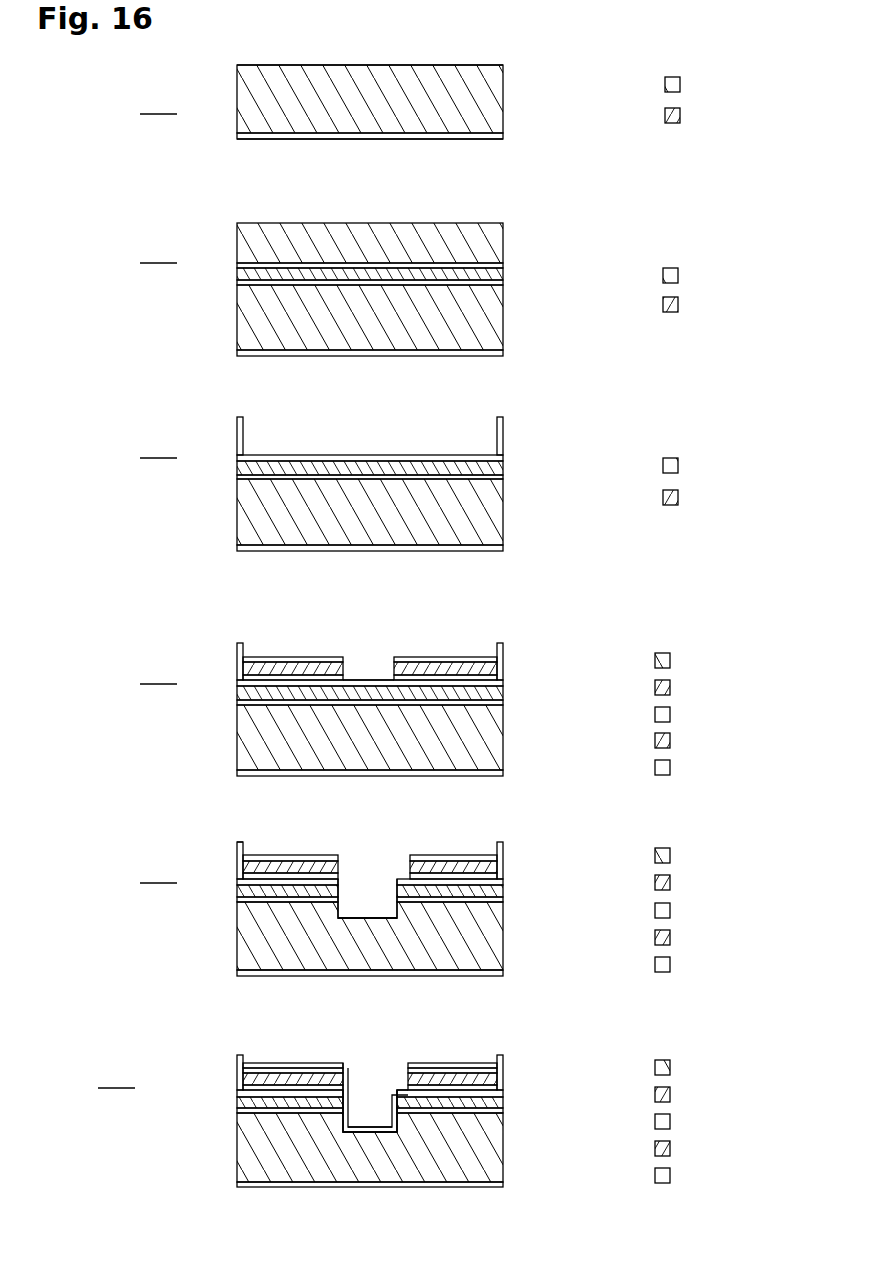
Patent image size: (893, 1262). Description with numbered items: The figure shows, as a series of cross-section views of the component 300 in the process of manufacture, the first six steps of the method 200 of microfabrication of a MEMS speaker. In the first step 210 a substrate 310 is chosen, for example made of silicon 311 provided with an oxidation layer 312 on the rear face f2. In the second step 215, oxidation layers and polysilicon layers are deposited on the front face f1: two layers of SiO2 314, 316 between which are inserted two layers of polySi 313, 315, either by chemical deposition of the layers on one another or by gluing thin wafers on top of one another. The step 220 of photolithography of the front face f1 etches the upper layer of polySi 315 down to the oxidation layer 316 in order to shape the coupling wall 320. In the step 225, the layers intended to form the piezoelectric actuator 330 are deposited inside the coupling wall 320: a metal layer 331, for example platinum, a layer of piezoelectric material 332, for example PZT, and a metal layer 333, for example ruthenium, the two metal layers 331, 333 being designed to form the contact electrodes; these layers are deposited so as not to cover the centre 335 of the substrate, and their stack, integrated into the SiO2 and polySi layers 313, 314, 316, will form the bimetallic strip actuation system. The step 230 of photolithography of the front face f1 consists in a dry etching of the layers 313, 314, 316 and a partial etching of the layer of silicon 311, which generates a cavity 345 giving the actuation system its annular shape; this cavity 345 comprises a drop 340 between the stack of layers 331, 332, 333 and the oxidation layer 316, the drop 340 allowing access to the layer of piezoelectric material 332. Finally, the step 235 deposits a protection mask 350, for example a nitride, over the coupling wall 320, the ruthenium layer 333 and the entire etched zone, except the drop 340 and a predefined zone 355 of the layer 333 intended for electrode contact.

The method of microfabrication 200 is at (742, 183).
The first step 210 is at (158, 103).
The second step 215 is at (158, 252).
The step of photolithography 220 is at (158, 447).
The step of depositing actuator layers 225 is at (158, 672).
The step of photolithography 230 is at (158, 872).
The step of depositing protection mask 235 is at (116, 1077).
The component 300 is at (212, 307).
The substrate 310 is at (387, 626).
The silicon 311 is at (480, 108).
The oxidation layer 312 is at (500, 136).
The layer of polySi 313 is at (505, 274).
The layer of SiO2 314 is at (505, 283).
The upper layer of polySi 315 is at (483, 240).
The layer of SiO2 316 is at (505, 265).
The coupling wall 320 is at (243, 443).
The piezoelectric actuator 330 is at (402, 827).
The metal layer 331 is at (283, 600).
The layer of piezoelectric material 332 is at (355, 672).
The metal layer 333 is at (305, 657).
The centre of the substrate 335 is at (365, 682).
The drop 340 is at (397, 880).
The cavity 345 is at (373, 905).
The protection mask 350 is at (342, 1066).
The predefined zone 355 is at (258, 1063).
The front face f1 is at (340, 61).
The rear face f2 is at (342, 140).